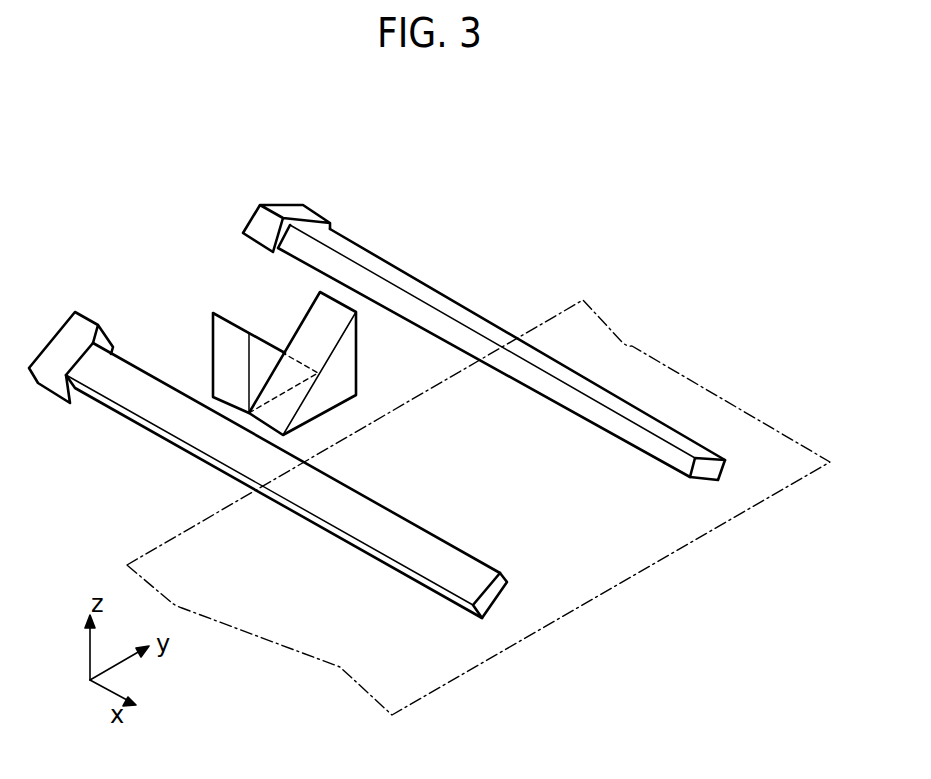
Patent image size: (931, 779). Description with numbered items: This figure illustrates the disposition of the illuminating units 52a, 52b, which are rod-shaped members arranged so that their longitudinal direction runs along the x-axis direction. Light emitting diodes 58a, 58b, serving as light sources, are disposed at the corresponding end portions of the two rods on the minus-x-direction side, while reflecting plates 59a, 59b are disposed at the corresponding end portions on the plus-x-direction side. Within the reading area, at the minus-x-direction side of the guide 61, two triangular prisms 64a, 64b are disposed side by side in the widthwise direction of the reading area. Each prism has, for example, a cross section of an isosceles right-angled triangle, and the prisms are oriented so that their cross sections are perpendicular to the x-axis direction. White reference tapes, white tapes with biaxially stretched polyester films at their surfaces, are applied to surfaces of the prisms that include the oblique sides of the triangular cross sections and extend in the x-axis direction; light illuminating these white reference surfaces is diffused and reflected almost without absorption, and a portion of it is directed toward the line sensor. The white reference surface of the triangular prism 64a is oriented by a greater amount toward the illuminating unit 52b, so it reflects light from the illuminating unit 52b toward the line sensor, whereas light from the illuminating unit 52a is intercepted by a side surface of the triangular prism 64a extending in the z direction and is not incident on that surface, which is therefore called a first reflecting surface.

The illuminating unit 52a is at (125, 420).
The illuminating unit 52b is at (392, 265).
The light emitting diode 58a is at (78, 320).
The light emitting diode 58b is at (255, 225).
The reflecting plate 59a is at (490, 595).
The reflecting plate 59b is at (703, 477).
The guide 61 is at (430, 398).
The triangular prism 64a is at (215, 342).
The triangular prism 64b is at (308, 327).